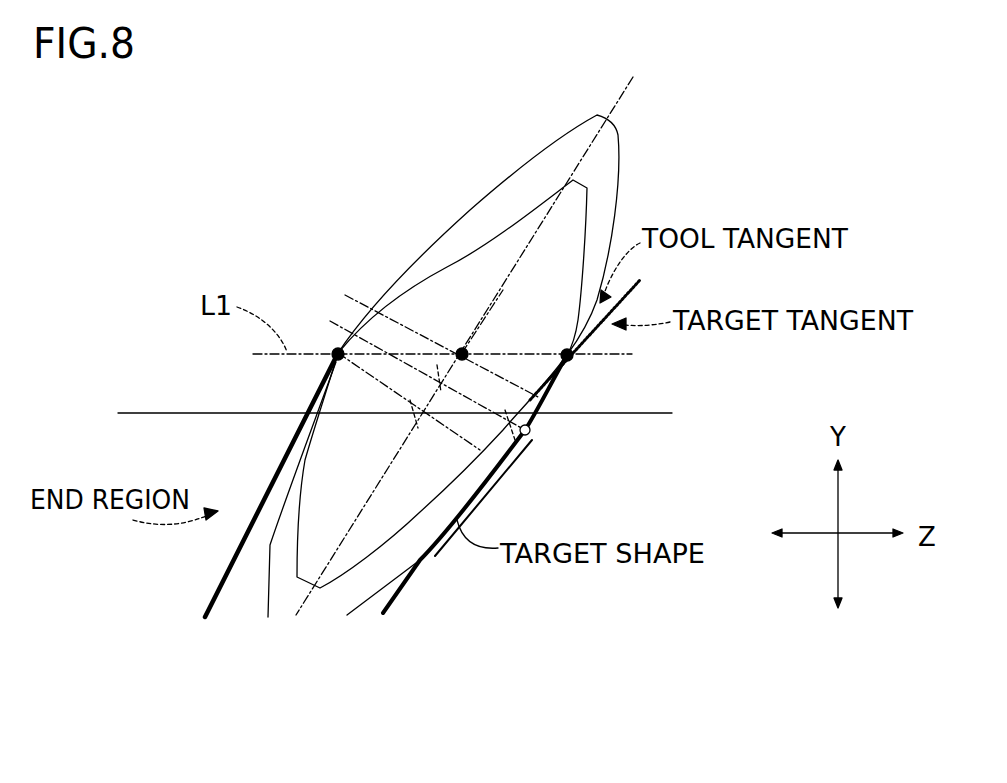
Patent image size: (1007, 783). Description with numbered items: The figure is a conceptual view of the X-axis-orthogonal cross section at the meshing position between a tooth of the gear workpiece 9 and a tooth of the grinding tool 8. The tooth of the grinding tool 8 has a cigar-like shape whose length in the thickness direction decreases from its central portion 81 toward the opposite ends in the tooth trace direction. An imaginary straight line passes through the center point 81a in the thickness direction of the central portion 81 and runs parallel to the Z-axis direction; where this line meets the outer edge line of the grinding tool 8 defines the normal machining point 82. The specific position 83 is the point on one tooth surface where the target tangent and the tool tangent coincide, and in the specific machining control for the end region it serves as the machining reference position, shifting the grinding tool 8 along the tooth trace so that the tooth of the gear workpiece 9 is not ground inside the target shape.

The grinding tool 8 is at (405, 507).
The gear workpiece 9 is at (215, 440).
The central portion 81 is at (398, 312).
The center point 81a is at (462, 348).
The normal machining point 82 is at (332, 347).
The specific position 83 is at (338, 347).